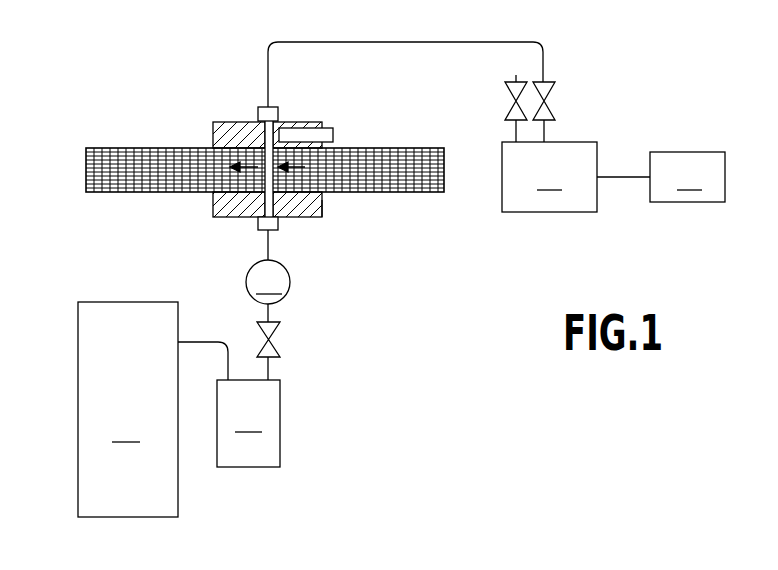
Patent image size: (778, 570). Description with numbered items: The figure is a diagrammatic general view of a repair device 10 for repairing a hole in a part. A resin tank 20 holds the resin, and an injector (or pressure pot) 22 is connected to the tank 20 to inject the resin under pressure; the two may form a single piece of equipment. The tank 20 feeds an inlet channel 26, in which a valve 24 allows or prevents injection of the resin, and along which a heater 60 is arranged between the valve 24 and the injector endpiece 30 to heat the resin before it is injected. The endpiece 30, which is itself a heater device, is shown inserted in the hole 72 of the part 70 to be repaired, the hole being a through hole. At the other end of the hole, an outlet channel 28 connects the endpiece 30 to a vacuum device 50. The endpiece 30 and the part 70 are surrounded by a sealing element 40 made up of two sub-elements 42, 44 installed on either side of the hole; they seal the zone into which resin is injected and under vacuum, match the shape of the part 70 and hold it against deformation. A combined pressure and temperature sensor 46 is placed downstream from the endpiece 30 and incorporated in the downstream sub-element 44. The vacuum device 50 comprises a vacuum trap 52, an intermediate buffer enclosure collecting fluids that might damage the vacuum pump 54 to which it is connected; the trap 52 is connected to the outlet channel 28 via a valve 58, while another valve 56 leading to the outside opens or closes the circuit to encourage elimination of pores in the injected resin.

The repair device 10 is at (418, 252).
The resin tank 20 is at (248, 423).
The injector (pressure pot) 22 is at (153, 409).
The valve 24 is at (280, 333).
The inlet channel 26 is at (273, 245).
The outlet channel 28 is at (376, 41).
The injector endpiece 30 is at (328, 212).
The sealing element 40 is at (273, 147).
The sub-element 42 is at (213, 200).
The downstream sub-element 44 is at (213, 140).
The sensor 46 is at (329, 128).
The vacuum device 50 is at (613, 148).
The vacuum trap 52 is at (549, 177).
The vacuum pump 54 is at (687, 177).
The valve 56 is at (509, 108).
The valve 58 is at (553, 92).
The heater 60 is at (268, 282).
The part 70 is at (102, 150).
The hole 72 is at (253, 214).